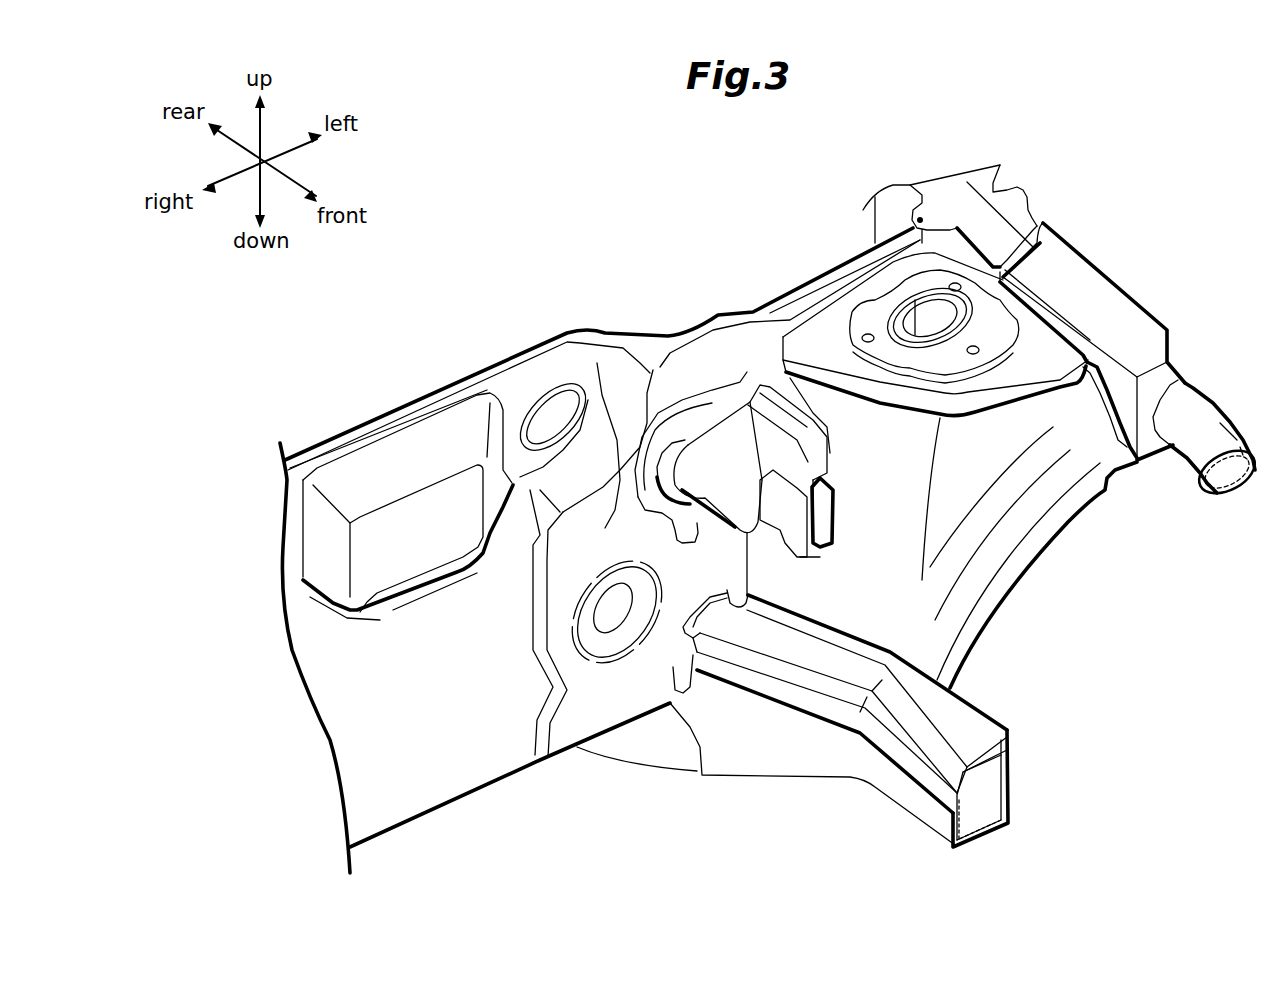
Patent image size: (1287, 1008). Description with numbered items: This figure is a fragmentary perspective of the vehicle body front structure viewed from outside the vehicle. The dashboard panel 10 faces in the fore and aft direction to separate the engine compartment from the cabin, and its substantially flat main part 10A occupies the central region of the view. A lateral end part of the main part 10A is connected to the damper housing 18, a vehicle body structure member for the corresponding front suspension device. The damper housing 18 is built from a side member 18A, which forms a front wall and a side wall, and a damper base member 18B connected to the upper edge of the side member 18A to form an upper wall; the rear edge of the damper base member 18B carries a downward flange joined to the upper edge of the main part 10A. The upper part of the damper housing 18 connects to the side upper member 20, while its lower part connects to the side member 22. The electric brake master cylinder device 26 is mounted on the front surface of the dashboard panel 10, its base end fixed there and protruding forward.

The dashboard panel 10 is at (477, 745).
The main part 10A is at (607, 523).
The damper housing 18 is at (977, 482).
The side member 18A is at (943, 527).
The damper base member 18B is at (1053, 337).
The side upper member 20 is at (1133, 333).
The side member 22 is at (968, 728).
The electric brake master cylinder device 26 is at (707, 430).